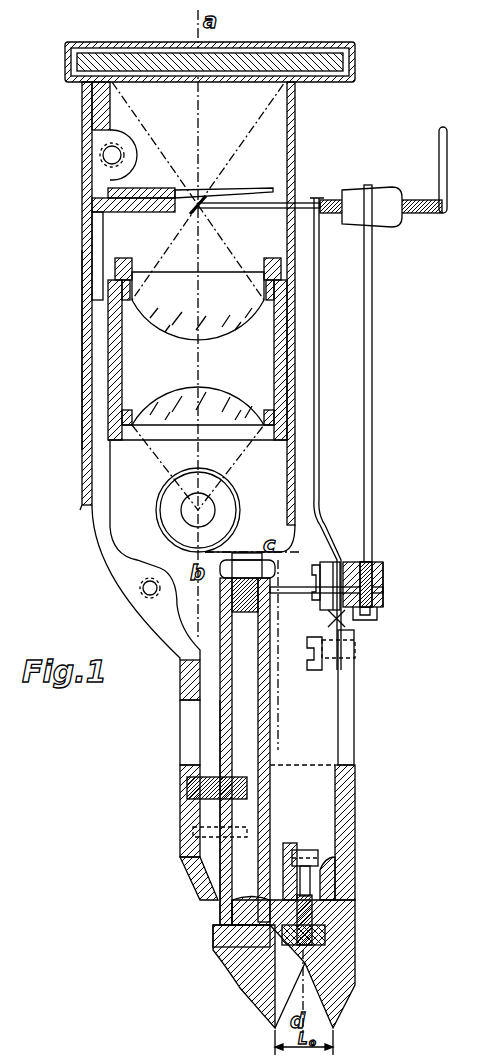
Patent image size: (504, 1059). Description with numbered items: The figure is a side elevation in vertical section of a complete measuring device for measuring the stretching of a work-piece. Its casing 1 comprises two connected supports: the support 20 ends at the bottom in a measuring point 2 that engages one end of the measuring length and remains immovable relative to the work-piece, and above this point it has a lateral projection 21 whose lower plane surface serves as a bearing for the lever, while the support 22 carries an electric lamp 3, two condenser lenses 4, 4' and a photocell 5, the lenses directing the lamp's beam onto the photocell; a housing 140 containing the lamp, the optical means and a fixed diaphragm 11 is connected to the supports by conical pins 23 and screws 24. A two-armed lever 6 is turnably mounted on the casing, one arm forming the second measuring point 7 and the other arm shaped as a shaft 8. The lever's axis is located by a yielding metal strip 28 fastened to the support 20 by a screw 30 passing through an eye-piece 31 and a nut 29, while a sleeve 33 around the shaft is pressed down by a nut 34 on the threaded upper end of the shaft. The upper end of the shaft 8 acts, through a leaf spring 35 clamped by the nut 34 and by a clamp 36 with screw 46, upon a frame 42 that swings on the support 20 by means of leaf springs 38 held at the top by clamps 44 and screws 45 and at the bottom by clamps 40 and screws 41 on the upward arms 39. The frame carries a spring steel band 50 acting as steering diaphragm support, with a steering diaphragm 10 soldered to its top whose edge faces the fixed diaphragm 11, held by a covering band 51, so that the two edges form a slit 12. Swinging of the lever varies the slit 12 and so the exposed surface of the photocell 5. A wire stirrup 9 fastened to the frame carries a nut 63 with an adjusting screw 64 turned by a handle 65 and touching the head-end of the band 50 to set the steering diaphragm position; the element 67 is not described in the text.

The casing 1 is at (193, 371).
The measuring point 2 is at (350, 1008).
The electric lamp 3 is at (168, 521).
The condenser lens 4 is at (198, 393).
The condenser lens 4' is at (198, 304).
The photocell 5 is at (72, 61).
The two-armed lever 6 is at (237, 885).
The measuring point 7 is at (260, 1000).
The shaft 8 is at (246, 618).
The wire stirrup 9 is at (372, 420).
The steering diaphragm 10 is at (276, 207).
The diaphragm 11 is at (136, 211).
The slit 12 is at (192, 206).
The support 20 is at (355, 785).
The lateral projection 21 is at (302, 770).
The support 22 is at (95, 512).
The conical pin 23 is at (180, 838).
The screw 24 is at (183, 810).
The metal strip 28 is at (213, 927).
The nut 29 is at (326, 935).
The screw 30 is at (310, 880).
The eye-piece 31 is at (292, 852).
The sleeve 33 is at (198, 702).
The nut 34 is at (222, 575).
The leaf spring 35 is at (292, 588).
The clamp 36 is at (383, 600).
The leaf spring 38 is at (333, 612).
The arm 39 is at (355, 735).
The clamp 40 is at (327, 665).
The screw 41 is at (310, 662).
The frame 42 is at (362, 565).
The clamp 44 is at (330, 562).
The screw 45 is at (316, 568).
The screw 46 is at (375, 616).
The steering diaphragm support 50 is at (319, 352).
The covering band 51 is at (83, 350).
The nut 63 is at (378, 197).
The adjusting screw 64 is at (413, 214).
The handle 65 is at (447, 187).
The blade plate 67 is at (160, 178).
The housing 140 is at (296, 150).